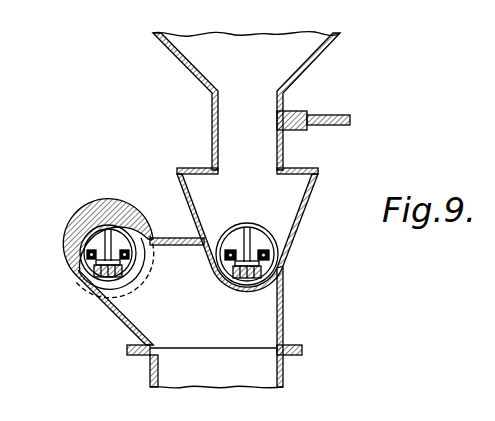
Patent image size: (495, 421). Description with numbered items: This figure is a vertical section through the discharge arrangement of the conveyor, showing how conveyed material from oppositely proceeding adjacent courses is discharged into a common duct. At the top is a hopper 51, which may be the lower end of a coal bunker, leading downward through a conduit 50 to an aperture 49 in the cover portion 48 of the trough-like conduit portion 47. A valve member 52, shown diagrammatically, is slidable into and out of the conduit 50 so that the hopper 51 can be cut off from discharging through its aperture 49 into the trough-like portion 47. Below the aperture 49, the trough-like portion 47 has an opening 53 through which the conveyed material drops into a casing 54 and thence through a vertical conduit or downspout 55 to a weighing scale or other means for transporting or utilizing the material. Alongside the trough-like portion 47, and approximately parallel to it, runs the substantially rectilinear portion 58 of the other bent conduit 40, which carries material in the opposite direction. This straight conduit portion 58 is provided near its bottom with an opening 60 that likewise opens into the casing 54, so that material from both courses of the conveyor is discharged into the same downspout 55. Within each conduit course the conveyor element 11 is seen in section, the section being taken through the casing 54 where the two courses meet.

The cartridge unit 11 is at (79, 244).
The bent conduit 40 is at (127, 201).
The trough-like conduit portion 47 is at (306, 205).
The cover portion 48 is at (197, 167).
The aperture 49 is at (277, 172).
The conduit 50 is at (212, 113).
The hopper 51 is at (186, 68).
The valve member 52 is at (336, 115).
The opening 53 is at (235, 290).
The casing 54 is at (284, 307).
The vertical conduit or downspout 55 is at (284, 371).
The rectilinear conduit portion 58 is at (84, 207).
The opening 60 is at (145, 259).